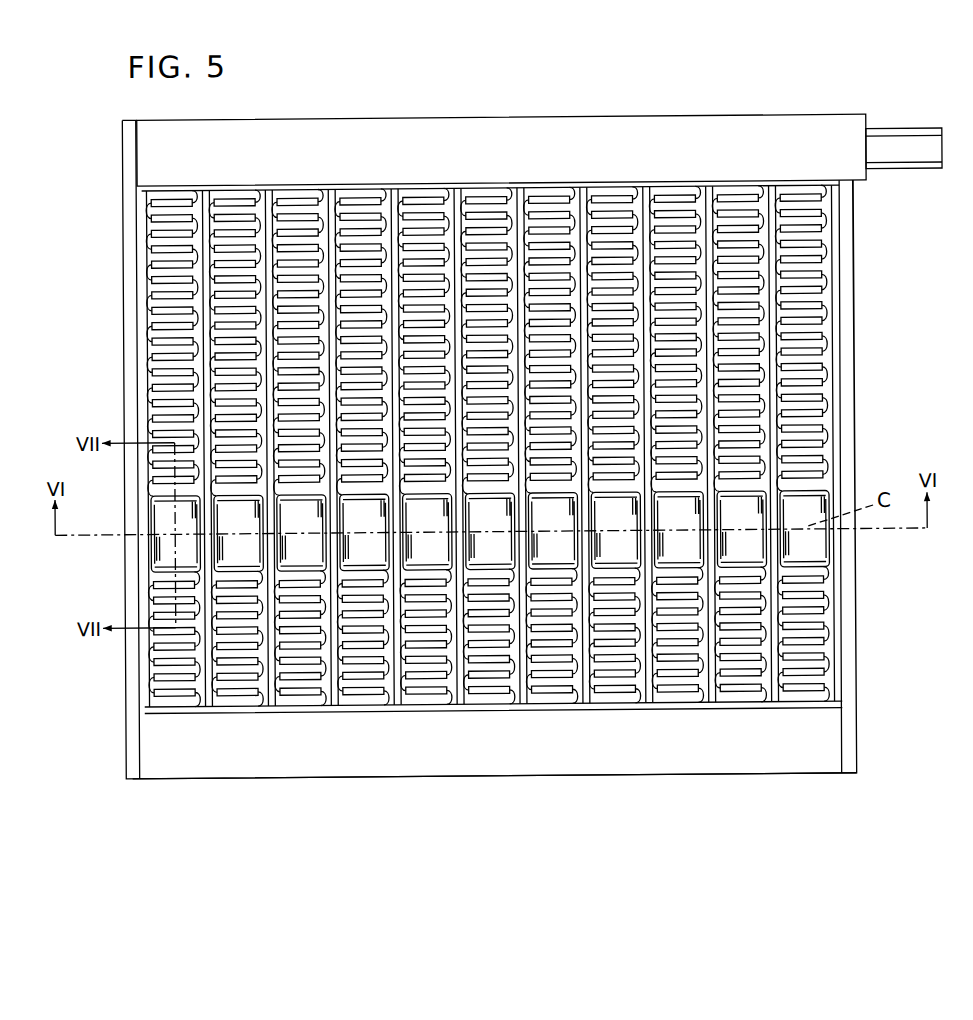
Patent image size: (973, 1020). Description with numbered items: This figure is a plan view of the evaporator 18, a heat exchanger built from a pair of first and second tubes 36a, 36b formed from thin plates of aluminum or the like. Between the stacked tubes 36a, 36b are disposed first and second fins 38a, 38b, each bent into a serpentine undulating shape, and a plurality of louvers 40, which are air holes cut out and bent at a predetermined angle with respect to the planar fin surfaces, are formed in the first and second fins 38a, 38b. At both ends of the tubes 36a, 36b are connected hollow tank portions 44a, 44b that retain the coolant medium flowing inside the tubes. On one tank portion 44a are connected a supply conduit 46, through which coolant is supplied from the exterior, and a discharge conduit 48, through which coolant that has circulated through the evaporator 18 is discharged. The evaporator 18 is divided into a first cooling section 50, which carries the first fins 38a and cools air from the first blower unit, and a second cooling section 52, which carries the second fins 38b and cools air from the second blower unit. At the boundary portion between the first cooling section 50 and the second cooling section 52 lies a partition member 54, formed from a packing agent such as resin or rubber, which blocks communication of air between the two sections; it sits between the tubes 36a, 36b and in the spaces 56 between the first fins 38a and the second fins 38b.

The evaporator 18 is at (797, 109).
The first tube 36a is at (491, 188).
The second tube 36b is at (581, 705).
The first fin 38a is at (142, 271).
The second fin 38b is at (146, 676).
The louver 40 is at (162, 233).
The tank portion 44a is at (342, 131).
The tank portion 44b is at (396, 758).
The supply conduit 46 is at (904, 165).
The discharge conduit 48 is at (914, 140).
The first cooling section 50 is at (798, 322).
The second cooling section 52 is at (798, 627).
The partition member 54 is at (817, 555).
The space 56 is at (167, 568).